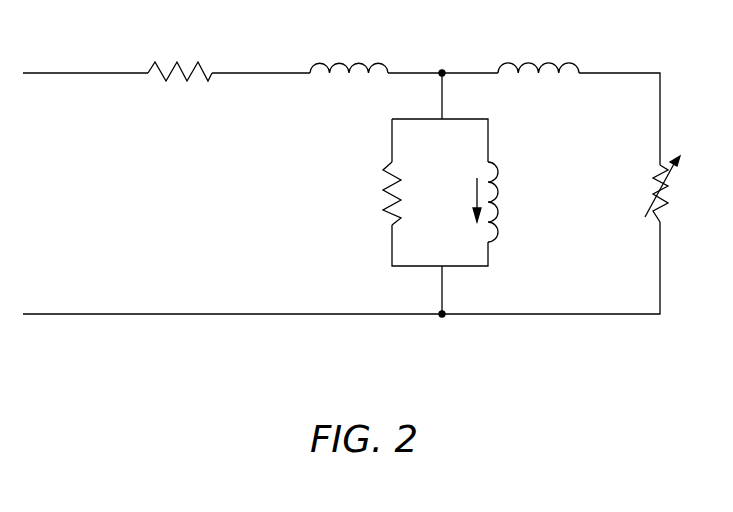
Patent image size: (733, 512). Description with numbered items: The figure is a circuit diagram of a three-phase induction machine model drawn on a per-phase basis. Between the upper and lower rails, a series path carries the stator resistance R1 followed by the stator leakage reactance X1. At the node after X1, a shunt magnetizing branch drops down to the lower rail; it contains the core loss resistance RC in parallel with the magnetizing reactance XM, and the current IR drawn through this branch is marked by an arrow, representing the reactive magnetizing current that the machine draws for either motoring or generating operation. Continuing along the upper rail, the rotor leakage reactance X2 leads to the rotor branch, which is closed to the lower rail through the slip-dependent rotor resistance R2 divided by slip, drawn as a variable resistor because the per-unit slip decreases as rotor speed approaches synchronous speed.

The stator resistance R1 is at (180, 56).
The stator leakage reactance X1 is at (349, 52).
The rotor leakage reactance X2 is at (538, 52).
The core loss resistance RC is at (376, 193).
The magnetizing reactance XM is at (508, 202).
The magnetizing branch current IR is at (465, 200).
The rotor resistance divided by slip R2 is at (705, 205).